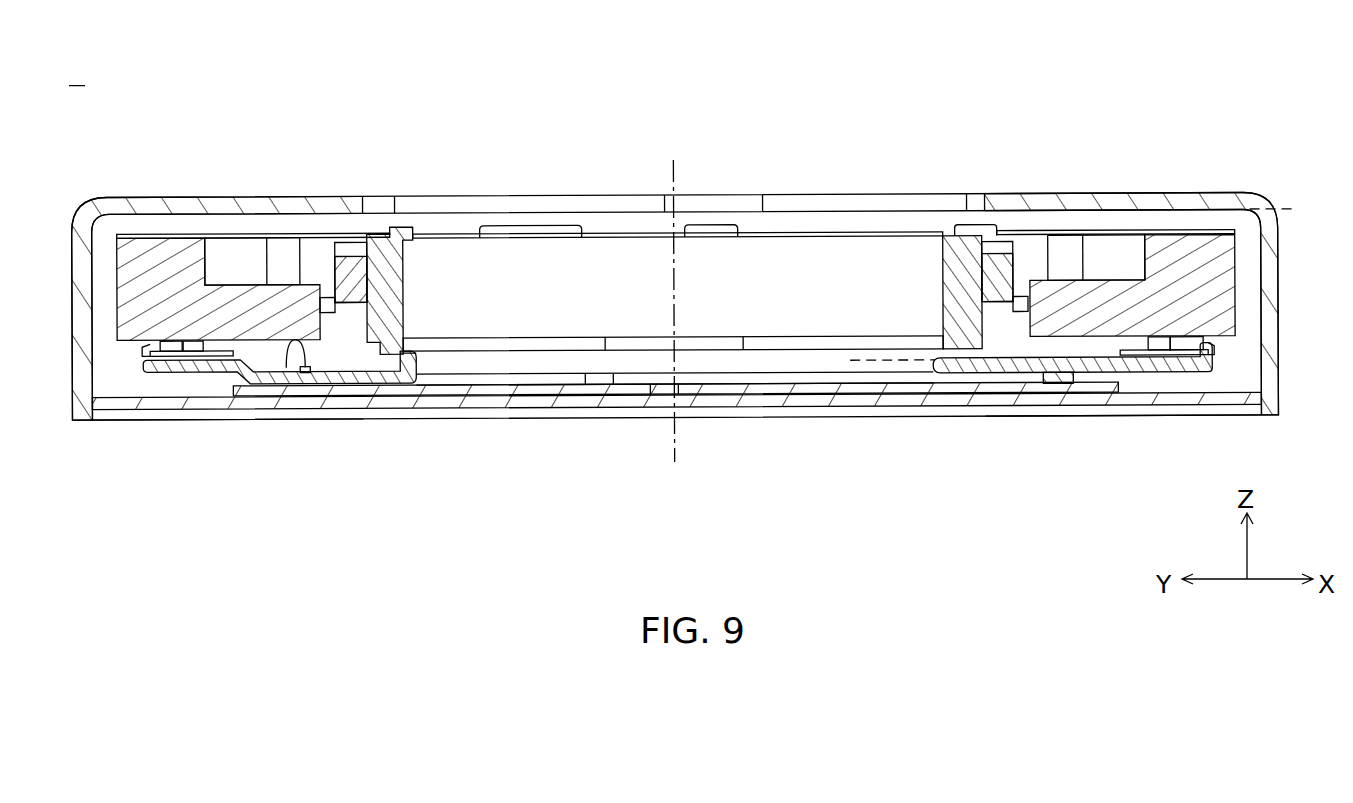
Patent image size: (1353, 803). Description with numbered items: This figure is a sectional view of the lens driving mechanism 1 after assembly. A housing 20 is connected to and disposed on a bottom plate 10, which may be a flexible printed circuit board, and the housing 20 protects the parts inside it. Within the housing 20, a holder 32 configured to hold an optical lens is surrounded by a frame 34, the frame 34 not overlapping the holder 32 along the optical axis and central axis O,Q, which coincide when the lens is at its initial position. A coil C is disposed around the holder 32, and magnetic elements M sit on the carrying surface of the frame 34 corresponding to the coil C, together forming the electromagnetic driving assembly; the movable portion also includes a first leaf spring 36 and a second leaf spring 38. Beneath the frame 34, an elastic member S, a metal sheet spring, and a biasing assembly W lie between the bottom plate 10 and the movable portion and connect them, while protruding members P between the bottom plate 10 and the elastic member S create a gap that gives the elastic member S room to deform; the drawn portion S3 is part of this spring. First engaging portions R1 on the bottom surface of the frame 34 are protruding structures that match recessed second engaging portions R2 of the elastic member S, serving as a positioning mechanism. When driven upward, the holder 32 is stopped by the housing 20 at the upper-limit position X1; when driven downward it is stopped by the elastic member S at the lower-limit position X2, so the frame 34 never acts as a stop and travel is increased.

The lens driving mechanism 1 is at (77, 75).
The bottom plate 10 is at (124, 400).
The housing 20 is at (128, 205).
The holder 32 is at (398, 262).
The frame 34 is at (185, 288).
The first leaf spring 36 is at (1001, 366).
The second leaf spring 38 is at (1203, 232).
The magnetic element M is at (283, 262).
The coil C is at (352, 280).
The biasing assembly W is at (196, 366).
The elastic member S is at (384, 378).
The spring plate end portion S3 is at (414, 357).
The first engaging portion R1 is at (284, 352).
The second engaging portion R2 is at (318, 370).
The protruding member P is at (1060, 386).
The optical axis and central axis O,Q is at (671, 296).
The upper-limit position X1 is at (1292, 208).
The lower-limit position X2 is at (873, 362).